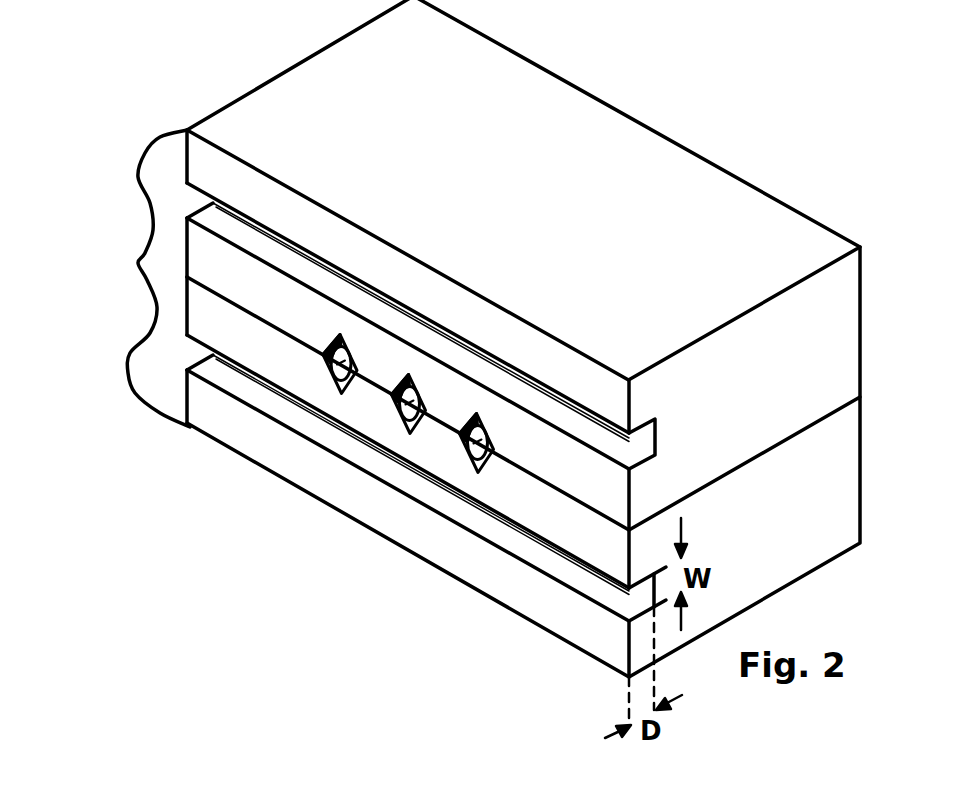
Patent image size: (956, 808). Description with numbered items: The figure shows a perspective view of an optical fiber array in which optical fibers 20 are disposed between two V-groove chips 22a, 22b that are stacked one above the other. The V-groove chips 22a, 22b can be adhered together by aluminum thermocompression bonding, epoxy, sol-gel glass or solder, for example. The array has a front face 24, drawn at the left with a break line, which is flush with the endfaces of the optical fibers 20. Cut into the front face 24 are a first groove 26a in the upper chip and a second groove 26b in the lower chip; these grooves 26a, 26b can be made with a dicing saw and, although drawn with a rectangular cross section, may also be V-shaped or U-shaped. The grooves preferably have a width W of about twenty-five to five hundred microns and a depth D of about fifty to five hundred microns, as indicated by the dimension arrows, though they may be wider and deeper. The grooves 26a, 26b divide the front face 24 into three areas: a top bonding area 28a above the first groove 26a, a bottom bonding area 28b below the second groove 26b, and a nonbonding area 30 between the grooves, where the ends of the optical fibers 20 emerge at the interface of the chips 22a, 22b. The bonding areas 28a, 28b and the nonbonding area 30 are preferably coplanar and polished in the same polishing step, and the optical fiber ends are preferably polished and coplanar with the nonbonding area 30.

The optical fibers 20 is at (323, 377).
The V-groove chip 22a is at (807, 386).
The V-groove chip 22b is at (805, 539).
The front face 24 is at (114, 278).
The first groove 26a is at (561, 410).
The second groove 26b is at (575, 567).
The top bonding area 28a is at (493, 328).
The bottom bonding area 28b is at (407, 525).
The nonbonding area 30 is at (500, 483).